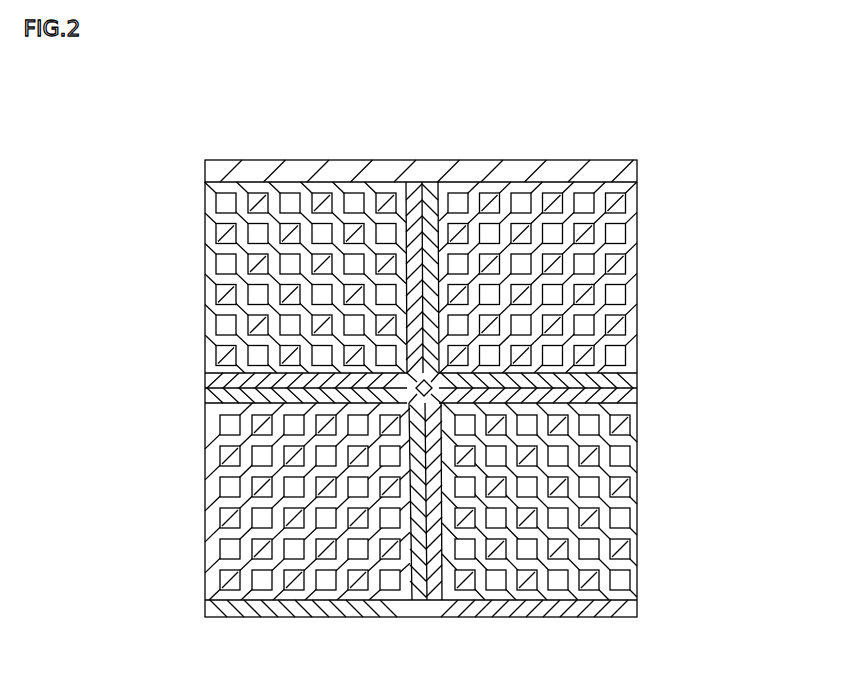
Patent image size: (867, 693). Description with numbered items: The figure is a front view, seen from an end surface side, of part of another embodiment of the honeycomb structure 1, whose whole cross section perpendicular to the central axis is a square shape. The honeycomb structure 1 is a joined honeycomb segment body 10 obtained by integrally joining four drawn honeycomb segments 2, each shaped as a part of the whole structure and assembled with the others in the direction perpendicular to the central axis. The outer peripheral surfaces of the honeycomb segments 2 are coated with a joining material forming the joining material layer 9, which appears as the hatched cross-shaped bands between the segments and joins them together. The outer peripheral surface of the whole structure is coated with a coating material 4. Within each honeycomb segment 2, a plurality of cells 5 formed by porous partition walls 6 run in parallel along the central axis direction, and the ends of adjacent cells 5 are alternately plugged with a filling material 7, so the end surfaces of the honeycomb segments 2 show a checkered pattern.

The honeycomb structure 1 is at (330, 110).
The joined honeycomb segment body 10 is at (422, 382).
The honeycomb segment 2 is at (193, 253).
The coating material 4 is at (493, 168).
The cell 5 is at (292, 207).
The partition wall 6 is at (338, 184).
The filling material 7 is at (258, 205).
The joining material layer 9 is at (434, 183).